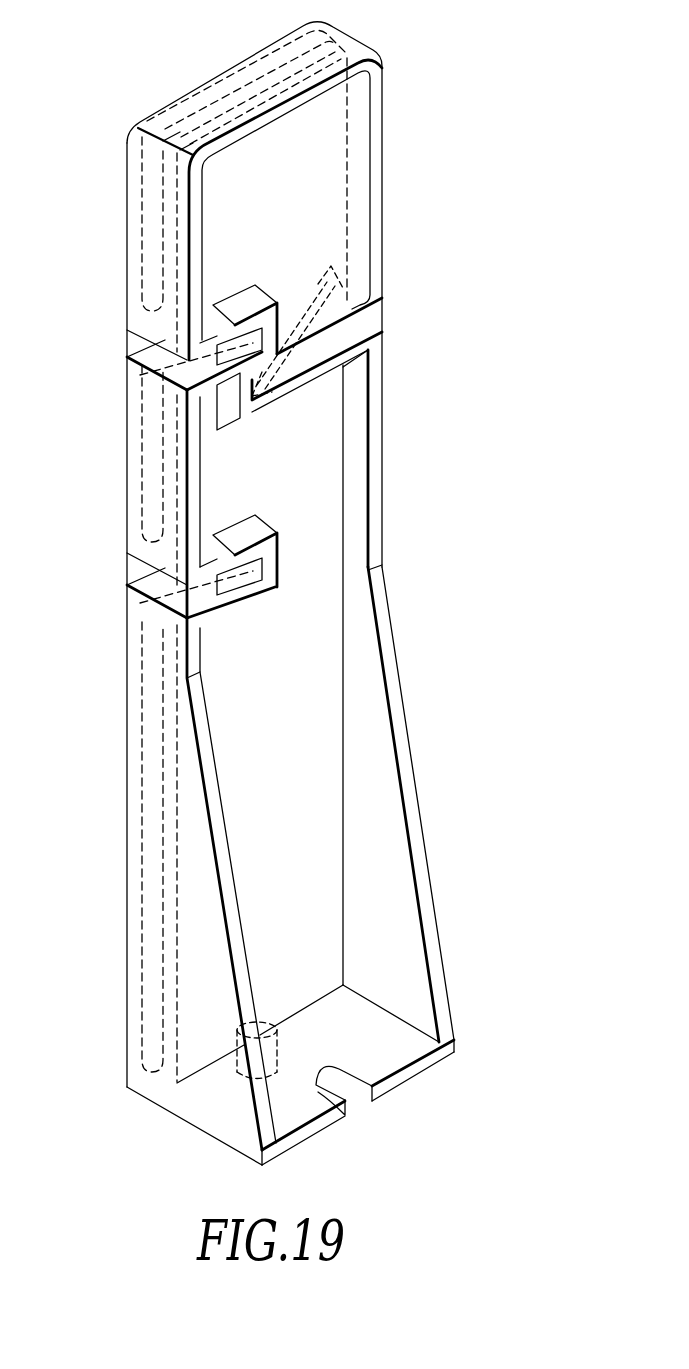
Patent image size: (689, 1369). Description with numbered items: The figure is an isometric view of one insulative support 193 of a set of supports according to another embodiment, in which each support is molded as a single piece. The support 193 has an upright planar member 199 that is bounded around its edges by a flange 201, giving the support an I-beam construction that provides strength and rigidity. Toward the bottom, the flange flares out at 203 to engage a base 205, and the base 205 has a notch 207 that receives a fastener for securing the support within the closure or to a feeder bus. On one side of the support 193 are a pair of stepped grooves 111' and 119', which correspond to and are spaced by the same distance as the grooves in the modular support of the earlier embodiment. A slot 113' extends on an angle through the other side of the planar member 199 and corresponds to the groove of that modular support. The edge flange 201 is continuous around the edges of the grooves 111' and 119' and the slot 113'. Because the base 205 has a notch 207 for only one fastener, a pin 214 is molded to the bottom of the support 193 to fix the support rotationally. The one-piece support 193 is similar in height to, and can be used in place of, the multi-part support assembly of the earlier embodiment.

The insulative support 193 is at (572, 463).
The stepped groove 111' is at (148, 342).
The slot 113' is at (322, 333).
The stepped groove 119' is at (164, 553).
The upright planar member 199 is at (323, 642).
The flange 201 is at (376, 467).
The flared portion of flange 203 is at (428, 885).
The base 205 is at (388, 1052).
The notch 207 is at (347, 1100).
The pin 214 is at (182, 1090).